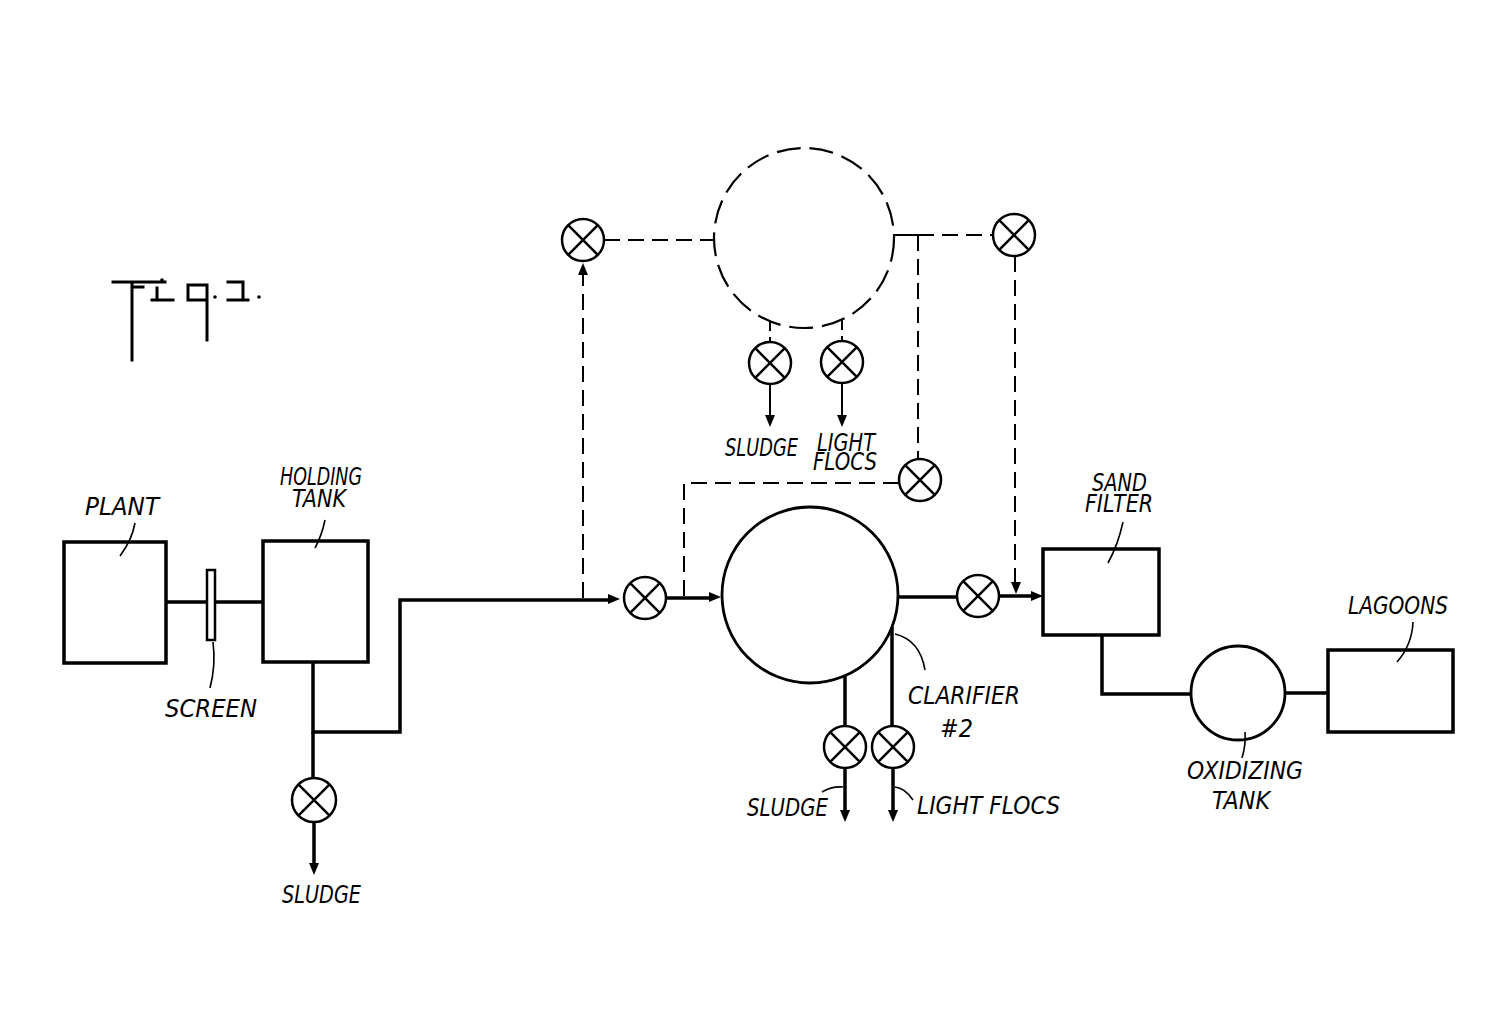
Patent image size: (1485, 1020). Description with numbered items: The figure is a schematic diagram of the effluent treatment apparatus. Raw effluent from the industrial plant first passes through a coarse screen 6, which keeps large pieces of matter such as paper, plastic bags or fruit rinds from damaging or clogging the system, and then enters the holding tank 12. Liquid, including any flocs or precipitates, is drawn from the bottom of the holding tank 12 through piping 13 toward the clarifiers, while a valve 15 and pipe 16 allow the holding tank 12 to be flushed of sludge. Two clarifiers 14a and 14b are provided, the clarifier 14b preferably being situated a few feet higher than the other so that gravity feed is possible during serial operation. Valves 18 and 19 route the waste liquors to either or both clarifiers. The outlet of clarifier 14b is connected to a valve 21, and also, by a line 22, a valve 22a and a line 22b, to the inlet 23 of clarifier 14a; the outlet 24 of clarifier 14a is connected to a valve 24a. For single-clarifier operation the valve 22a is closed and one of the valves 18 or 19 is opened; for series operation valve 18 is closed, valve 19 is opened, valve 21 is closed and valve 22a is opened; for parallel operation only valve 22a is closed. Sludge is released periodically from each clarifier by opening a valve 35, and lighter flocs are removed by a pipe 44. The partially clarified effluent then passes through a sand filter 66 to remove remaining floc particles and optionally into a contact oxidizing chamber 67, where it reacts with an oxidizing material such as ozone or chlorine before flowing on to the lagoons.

The coarse screen 6 is at (212, 570).
The holding tank 12 is at (368, 548).
The piping 13 is at (400, 693).
The clarifier 14a is at (760, 683).
The clarifier 14b is at (750, 166).
The valve 15 is at (293, 787).
The pipe 16 is at (314, 843).
The valve 18 is at (635, 622).
The valve 19 is at (565, 228).
The valve 21 is at (1035, 232).
The line 22 is at (923, 395).
The valve 22a is at (928, 495).
The line 22b is at (682, 520).
The inlet 23 is at (695, 602).
The outlet 24 is at (933, 592).
The valve 24a is at (977, 615).
The valve 35 is at (823, 745).
The pipe 44 is at (842, 330).
The sand filter 66 is at (1173, 583).
The contact oxidizing chamber 67 is at (1285, 626).